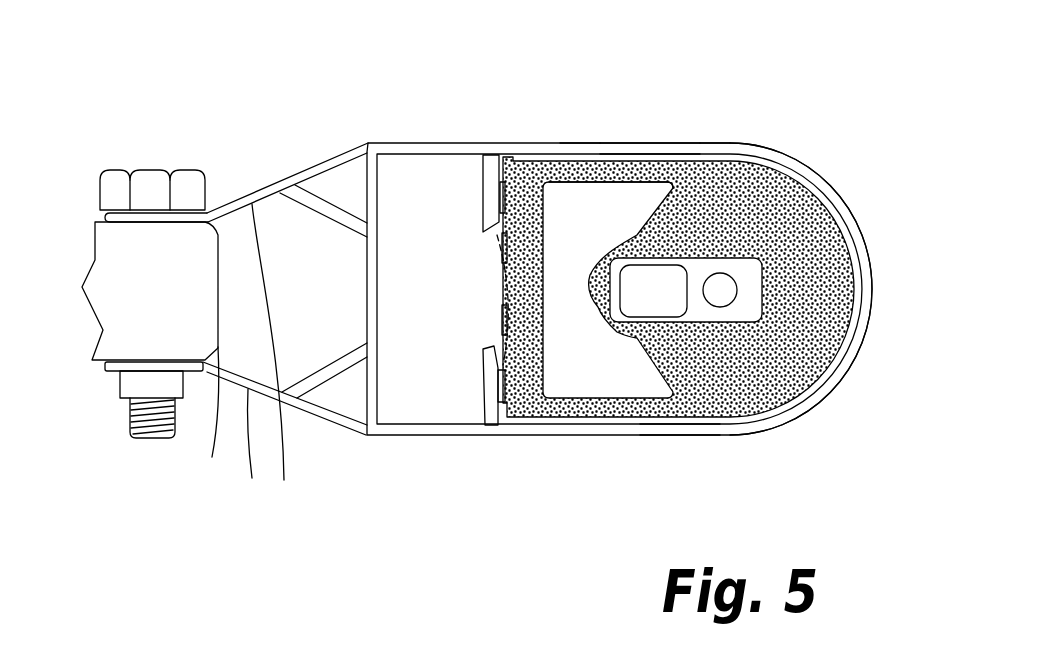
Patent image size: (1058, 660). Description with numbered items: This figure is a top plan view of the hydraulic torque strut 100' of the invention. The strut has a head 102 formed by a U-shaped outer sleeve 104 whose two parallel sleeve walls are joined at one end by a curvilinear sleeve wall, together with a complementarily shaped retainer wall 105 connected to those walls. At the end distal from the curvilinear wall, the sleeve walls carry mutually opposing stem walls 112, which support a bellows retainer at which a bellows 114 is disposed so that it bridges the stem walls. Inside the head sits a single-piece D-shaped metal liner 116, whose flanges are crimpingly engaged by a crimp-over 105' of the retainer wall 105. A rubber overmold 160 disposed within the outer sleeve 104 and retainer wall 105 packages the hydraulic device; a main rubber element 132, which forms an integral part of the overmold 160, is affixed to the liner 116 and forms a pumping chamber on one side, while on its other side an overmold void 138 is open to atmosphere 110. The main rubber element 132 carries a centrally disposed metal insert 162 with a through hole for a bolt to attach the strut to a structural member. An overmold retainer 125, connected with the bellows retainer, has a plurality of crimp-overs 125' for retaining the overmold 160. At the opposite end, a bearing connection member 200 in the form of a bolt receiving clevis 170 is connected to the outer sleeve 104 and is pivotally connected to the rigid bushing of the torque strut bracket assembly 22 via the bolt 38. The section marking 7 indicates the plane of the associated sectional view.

The torque strut bracket assembly 22 is at (150, 354).
The bolt 38 is at (180, 168).
The bearing connection member 200 is at (237, 158).
The bolt receiving clevis 170 is at (266, 357).
The hydraulic torque strut 100' is at (771, 86).
The head 102 is at (793, 150).
The U-shaped outer sleeve 104 is at (700, 444).
The retainer wall 105 is at (666, 104).
The crimp-over 105' is at (601, 91).
The atmosphere 110 is at (452, 383).
The stem wall 112 is at (482, 194).
The bellows 114 is at (500, 285).
The D-shaped metal liner 116 is at (662, 434).
The overmold retainer 125 is at (459, 284).
The crimp-overs 125' is at (548, 292).
The main rubber element 132 is at (628, 235).
The overmold void 138 is at (635, 217).
The rubber overmold 160 is at (788, 235).
The metal insert 162 is at (697, 324).
The section line 7- 7 is at (575, 130).